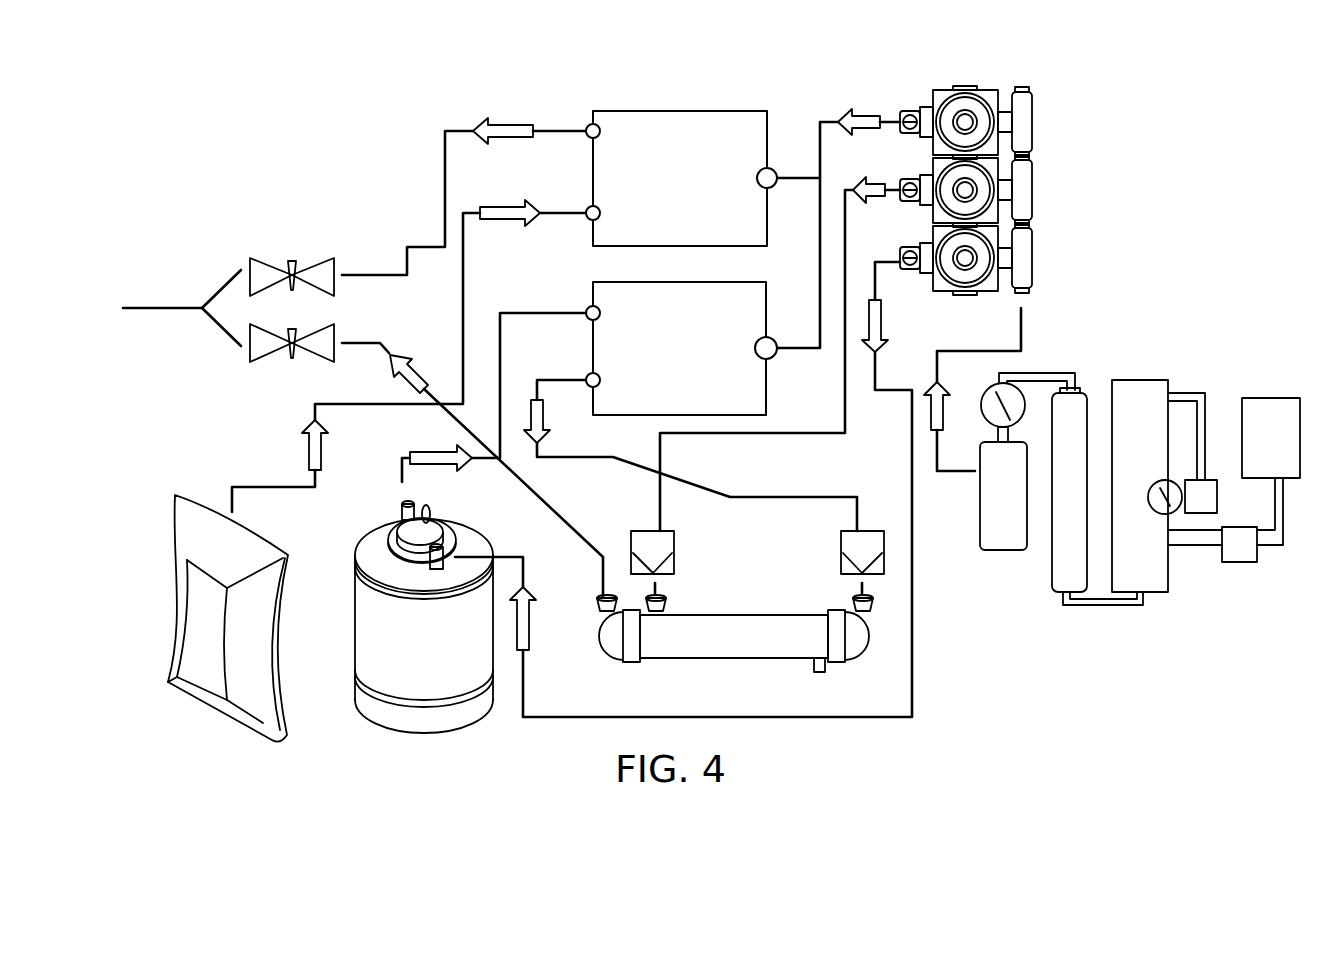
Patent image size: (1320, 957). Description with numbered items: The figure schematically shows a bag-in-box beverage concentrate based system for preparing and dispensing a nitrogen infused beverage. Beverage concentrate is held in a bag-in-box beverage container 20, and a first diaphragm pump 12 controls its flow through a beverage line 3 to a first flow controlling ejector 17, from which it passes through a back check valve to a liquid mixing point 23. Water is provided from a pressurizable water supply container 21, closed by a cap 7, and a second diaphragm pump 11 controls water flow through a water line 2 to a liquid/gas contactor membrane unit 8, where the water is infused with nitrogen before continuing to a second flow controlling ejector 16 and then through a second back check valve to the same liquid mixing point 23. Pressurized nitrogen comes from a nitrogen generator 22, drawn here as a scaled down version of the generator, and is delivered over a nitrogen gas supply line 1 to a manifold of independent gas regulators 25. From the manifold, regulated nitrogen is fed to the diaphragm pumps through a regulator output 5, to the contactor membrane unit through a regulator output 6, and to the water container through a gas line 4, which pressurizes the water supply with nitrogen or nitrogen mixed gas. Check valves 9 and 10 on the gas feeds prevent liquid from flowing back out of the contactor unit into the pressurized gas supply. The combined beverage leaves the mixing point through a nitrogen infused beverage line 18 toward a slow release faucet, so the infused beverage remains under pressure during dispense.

The nitrogen gas supply line 1 is at (950, 478).
The water line 2 is at (410, 483).
The beverage line 3 is at (230, 490).
The gas line 4 is at (882, 356).
The gas regulator output to diaphragm pumps 5 is at (862, 108).
The gas regulator output to contactor membrane unit 6 is at (850, 218).
The water supply container cap 7 is at (375, 545).
The liquid/gas contactor membrane unit 8 is at (745, 660).
The check valve 9 is at (840, 540).
The check valve 10 is at (678, 558).
The second diaphragm pump 11 is at (770, 302).
The first diaphragm pump 12 is at (658, 112).
The second flow controlling ejector 16 is at (290, 352).
The first flow controlling ejector 17 is at (288, 268).
The nitrogen infused beverage line 18 is at (123, 312).
The bag-in-box beverage container 20 is at (198, 688).
The pressurizable water supply container 21 is at (375, 720).
The nitrogen generator 22 is at (1142, 378).
The liquid mixing point 23 is at (205, 302).
The manifold of independent gas regulators 25 is at (1040, 185).